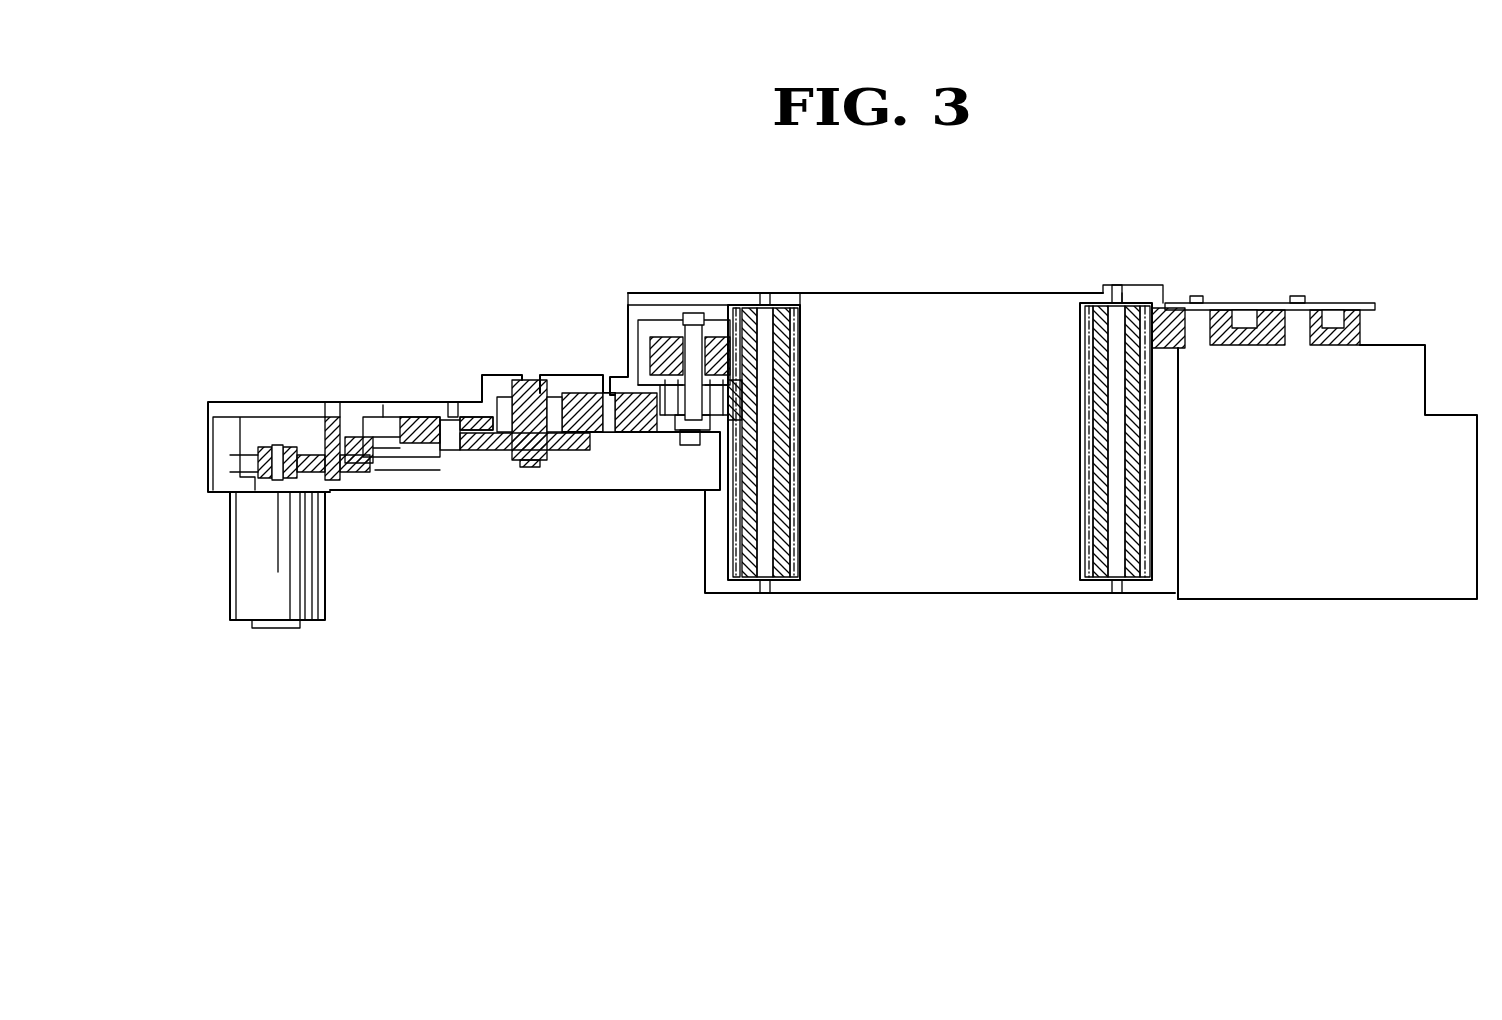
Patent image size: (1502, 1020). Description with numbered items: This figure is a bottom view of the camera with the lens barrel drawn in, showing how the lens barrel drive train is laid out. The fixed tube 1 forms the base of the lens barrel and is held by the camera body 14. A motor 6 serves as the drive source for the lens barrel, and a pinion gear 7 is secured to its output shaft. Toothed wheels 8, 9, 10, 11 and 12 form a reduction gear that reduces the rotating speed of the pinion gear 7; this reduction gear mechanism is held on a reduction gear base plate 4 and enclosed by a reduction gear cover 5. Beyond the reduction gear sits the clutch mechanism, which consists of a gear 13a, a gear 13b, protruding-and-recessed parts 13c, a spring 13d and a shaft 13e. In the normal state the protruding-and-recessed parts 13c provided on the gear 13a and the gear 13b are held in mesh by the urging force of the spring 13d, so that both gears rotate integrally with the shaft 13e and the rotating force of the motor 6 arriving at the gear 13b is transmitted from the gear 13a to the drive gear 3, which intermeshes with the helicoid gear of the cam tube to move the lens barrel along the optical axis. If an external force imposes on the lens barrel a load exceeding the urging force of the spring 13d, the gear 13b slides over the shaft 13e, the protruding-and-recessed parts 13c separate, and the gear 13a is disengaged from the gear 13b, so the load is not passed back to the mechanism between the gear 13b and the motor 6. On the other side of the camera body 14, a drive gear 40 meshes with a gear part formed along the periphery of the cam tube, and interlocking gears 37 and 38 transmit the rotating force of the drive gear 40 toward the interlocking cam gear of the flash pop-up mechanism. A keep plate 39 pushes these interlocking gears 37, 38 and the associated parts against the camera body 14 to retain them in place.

The fixed tube 1 is at (958, 570).
The drive gear 3 is at (783, 575).
The reduction gear base plate 4 is at (440, 480).
The reduction gear cover 5 is at (228, 408).
The motor 6 is at (276, 610).
The pinion gear 7 is at (250, 458).
The toothed wheel 8 is at (331, 420).
The toothed wheel 9 is at (400, 455).
The toothed wheel 10 is at (490, 445).
The toothed wheel 11 is at (548, 445).
The toothed wheel 12 is at (632, 420).
The gear 13a is at (622, 340).
The gear 13b is at (740, 405).
The protruding-and-recessed parts 13c is at (712, 345).
The spring 13d is at (668, 337).
The shaft 13e is at (690, 320).
The camera body 14 is at (1325, 580).
The interlocking gear 37 is at (1320, 300).
The interlocking gear 38 is at (1228, 300).
The keep plate 39 is at (1370, 300).
The drive gear 40 is at (1078, 570).